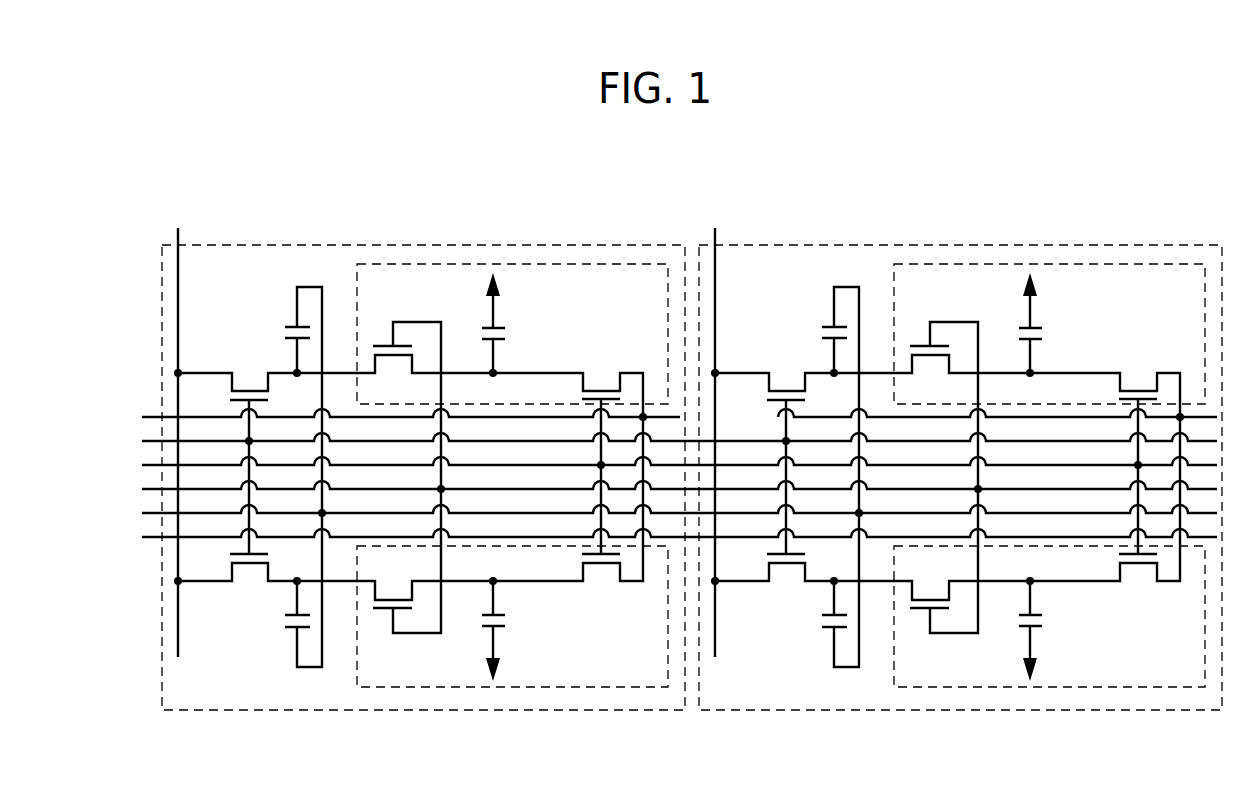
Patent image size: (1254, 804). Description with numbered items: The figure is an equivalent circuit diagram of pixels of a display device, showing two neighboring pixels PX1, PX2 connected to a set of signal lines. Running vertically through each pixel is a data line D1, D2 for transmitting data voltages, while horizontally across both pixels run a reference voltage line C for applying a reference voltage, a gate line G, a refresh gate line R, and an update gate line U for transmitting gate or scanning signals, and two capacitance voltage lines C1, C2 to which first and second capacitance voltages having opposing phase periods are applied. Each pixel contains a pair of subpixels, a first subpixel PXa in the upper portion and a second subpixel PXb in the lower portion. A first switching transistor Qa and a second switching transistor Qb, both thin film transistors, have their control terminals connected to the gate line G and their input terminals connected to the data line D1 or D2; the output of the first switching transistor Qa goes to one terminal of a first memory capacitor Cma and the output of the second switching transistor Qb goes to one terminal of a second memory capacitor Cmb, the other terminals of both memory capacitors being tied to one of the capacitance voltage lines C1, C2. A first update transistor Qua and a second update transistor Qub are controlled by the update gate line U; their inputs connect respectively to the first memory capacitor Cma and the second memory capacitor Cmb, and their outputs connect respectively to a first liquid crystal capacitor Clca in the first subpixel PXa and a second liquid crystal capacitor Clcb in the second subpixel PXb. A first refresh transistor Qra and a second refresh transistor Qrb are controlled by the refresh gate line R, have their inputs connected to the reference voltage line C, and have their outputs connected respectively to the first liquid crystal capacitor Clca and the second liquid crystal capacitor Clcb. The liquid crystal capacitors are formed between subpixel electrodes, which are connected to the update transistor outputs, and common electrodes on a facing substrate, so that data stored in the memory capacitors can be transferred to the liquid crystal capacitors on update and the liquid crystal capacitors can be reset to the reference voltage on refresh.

The pixel PX1 is at (453, 245).
The pixel PX2 is at (989, 245).
The first subpixel PXa is at (556, 264).
The second subpixel PXb is at (556, 687).
The data line D1 is at (180, 433).
The data line D2 is at (717, 433).
The reference voltage line C is at (665, 418).
The gate line G is at (665, 443).
The refresh gate line R is at (665, 466).
The update gate line U is at (665, 490).
The capacitance voltage line C1 is at (663, 515).
The capacitance voltage line C2 is at (663, 539).
The first switching transistor Qa is at (506, 403).
The second switching transistor Qb is at (506, 518).
The first memory capacitor Cma is at (556, 402).
The second memory capacitor Cmb is at (554, 590).
The first update transistor Qua is at (663, 407).
The second update transistor Qub is at (663, 561).
The first refresh transistor Qra is at (838, 415).
The second refresh transistor Qrb is at (836, 506).
The first liquid crystal capacitor Clca is at (783, 325).
The second liquid crystal capacitor Clcb is at (783, 629).